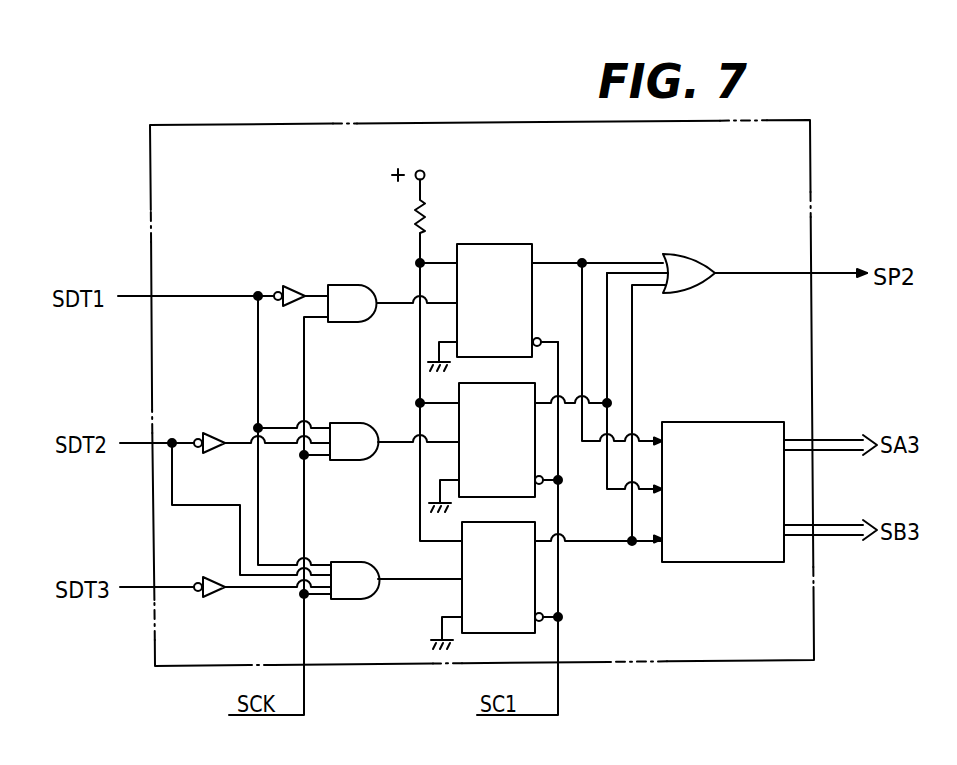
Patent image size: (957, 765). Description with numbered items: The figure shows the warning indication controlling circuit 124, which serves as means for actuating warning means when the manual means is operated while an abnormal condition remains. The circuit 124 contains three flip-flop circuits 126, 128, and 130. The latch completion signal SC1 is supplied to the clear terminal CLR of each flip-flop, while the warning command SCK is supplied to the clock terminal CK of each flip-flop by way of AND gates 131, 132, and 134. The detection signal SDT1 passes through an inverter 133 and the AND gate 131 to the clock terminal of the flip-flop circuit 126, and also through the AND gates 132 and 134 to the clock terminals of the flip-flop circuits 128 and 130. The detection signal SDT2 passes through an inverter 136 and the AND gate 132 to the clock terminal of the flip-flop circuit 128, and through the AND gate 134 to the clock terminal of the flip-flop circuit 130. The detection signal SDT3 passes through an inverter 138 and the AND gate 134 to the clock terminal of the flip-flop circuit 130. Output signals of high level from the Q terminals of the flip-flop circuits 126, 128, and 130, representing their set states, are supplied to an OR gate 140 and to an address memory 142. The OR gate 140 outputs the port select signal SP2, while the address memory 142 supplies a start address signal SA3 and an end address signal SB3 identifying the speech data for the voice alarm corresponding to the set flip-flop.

The warning indication controlling circuit 124 is at (150, 193).
The flip-flop circuit 126 is at (498, 244).
The flip-flop circuit 128 is at (462, 392).
The flip-flop circuit 130 is at (528, 578).
The AND gate 131 is at (349, 290).
The AND gate 132 is at (344, 459).
The inverter 133 is at (288, 284).
The AND gate 134 is at (346, 598).
The inverter 136 is at (208, 432).
The inverter 138 is at (209, 577).
The OR gate 140 is at (697, 284).
The address memory 142 is at (718, 422).